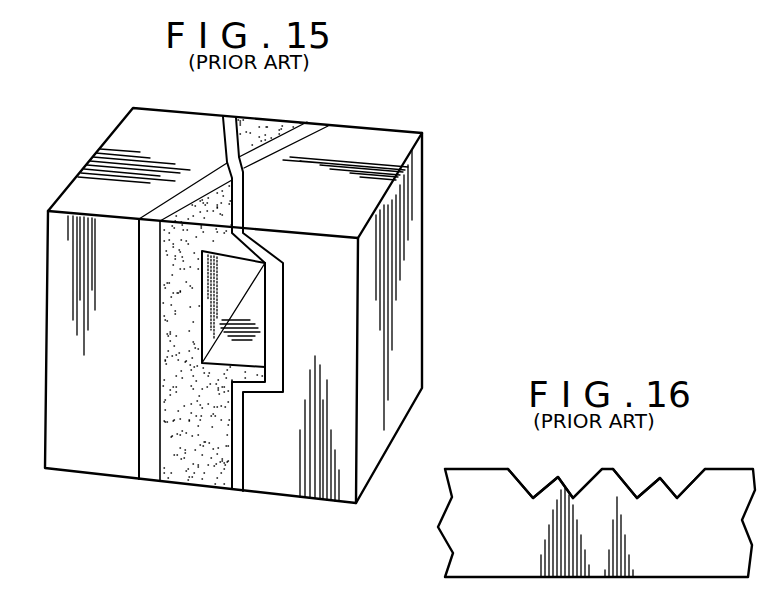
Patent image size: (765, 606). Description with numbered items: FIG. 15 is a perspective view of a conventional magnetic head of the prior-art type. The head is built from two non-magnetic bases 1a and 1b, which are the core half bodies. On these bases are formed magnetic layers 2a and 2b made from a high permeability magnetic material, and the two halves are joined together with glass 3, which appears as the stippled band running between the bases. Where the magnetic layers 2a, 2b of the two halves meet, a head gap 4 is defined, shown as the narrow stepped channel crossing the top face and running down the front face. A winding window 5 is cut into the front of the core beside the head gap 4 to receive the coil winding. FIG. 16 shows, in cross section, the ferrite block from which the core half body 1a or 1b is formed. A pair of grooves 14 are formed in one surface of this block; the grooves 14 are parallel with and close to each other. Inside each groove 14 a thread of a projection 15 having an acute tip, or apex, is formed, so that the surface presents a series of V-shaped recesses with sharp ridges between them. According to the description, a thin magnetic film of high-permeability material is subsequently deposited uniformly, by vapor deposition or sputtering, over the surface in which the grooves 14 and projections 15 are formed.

In FIG. 15, the non-magnetic base 1a is at (383, 145).
In FIG. 15, the non-magnetic base 1b is at (187, 126).
In FIG. 15, the magnetic layer 2a is at (310, 127).
In FIG. 15, the magnetic layer 2b is at (227, 118).
In FIG. 15, the glass 3 is at (198, 472).
In FIG. 15, the head gap 4 is at (243, 163).
In FIG. 15, the winding window 5 is at (238, 290).
In FIG. 16, the grooves 14 is at (533, 483).
In FIG. 16, the projection 15 is at (655, 483).